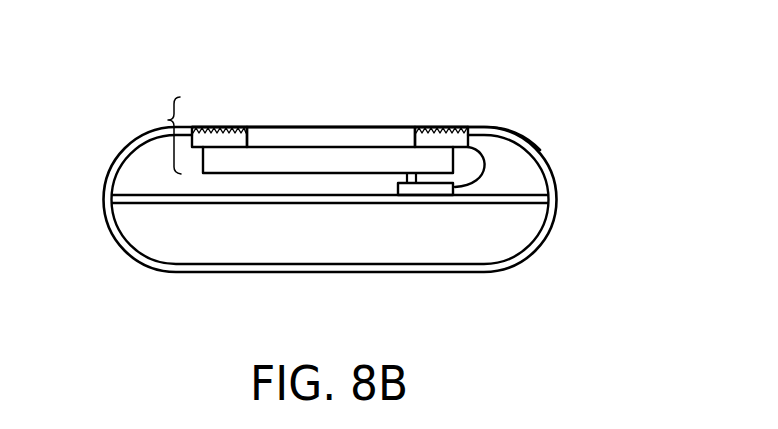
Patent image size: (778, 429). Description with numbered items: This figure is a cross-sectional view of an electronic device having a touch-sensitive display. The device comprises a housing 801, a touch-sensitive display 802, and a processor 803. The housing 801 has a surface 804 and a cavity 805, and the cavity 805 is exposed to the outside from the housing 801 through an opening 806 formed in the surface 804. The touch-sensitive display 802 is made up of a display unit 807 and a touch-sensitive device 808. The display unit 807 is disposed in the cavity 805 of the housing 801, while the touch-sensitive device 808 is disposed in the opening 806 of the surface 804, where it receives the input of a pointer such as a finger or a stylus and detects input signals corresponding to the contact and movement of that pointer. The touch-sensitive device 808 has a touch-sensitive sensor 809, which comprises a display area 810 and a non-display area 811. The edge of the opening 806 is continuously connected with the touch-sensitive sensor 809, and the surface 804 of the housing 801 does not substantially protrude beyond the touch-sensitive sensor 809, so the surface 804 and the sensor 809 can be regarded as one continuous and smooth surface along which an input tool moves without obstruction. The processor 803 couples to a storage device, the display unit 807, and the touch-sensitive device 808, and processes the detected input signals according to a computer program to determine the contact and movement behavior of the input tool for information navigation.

The housing 801 is at (542, 238).
The touch-sensitive display 802 is at (292, 135).
The processor 803 is at (440, 190).
The surface 804 is at (523, 134).
The cavity 805 is at (520, 174).
The opening 806 is at (470, 127).
The display unit 807 is at (317, 163).
The touch-sensitive device 808 is at (270, 138).
The touch-sensitive sensor 809 is at (440, 127).
The display area 810 is at (312, 127).
The non-display area 811 is at (222, 127).